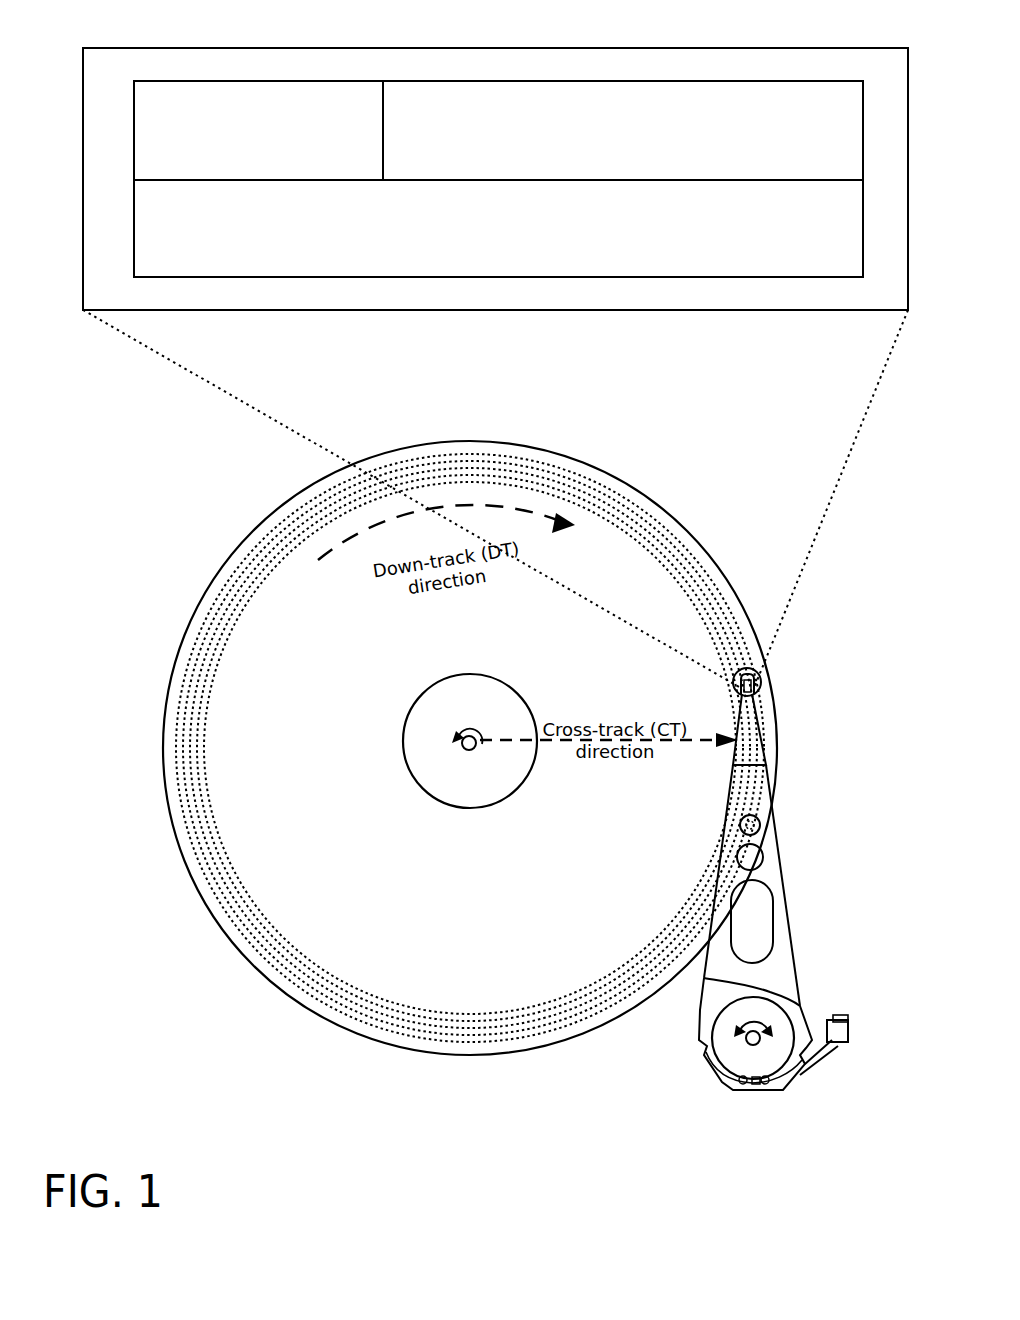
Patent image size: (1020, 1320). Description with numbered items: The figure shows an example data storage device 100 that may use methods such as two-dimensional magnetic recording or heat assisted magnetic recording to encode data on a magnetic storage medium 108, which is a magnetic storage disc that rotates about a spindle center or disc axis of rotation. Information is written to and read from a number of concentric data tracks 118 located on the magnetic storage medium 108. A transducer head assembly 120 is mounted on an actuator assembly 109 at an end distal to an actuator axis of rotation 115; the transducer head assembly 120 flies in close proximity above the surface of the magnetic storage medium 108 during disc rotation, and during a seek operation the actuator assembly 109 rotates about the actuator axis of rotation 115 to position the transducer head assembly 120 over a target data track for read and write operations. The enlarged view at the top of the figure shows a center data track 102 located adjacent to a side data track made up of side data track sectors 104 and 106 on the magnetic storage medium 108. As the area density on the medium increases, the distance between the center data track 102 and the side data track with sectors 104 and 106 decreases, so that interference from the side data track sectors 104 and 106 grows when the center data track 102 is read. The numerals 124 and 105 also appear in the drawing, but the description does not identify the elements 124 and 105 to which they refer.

The data storage device 100 is at (148, 527).
The center data track 102 is at (863, 236).
The side data track sector 104 is at (291, 81).
The side data track sector 106 is at (590, 81).
The magnetic storage medium 108 is at (282, 992).
The spindle / hub 124 is at (475, 735).
The concentric data tracks 118 is at (764, 668).
The transducer head assembly 120 is at (758, 686).
The actuator assembly 109 is at (733, 890).
The actuator assembly 105 is at (725, 965).
The actuator axis of rotation 115 is at (746, 1040).